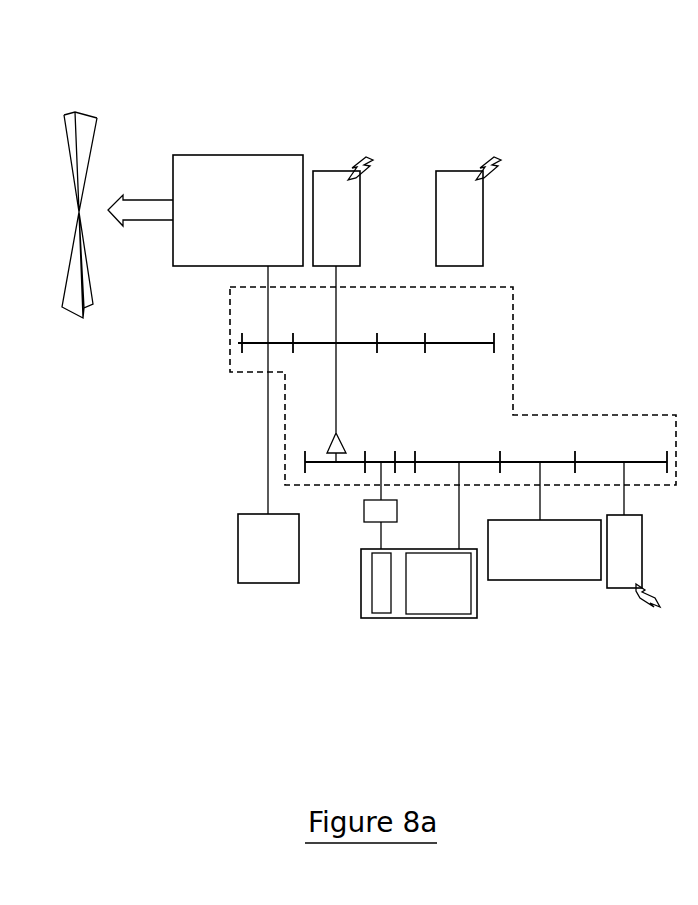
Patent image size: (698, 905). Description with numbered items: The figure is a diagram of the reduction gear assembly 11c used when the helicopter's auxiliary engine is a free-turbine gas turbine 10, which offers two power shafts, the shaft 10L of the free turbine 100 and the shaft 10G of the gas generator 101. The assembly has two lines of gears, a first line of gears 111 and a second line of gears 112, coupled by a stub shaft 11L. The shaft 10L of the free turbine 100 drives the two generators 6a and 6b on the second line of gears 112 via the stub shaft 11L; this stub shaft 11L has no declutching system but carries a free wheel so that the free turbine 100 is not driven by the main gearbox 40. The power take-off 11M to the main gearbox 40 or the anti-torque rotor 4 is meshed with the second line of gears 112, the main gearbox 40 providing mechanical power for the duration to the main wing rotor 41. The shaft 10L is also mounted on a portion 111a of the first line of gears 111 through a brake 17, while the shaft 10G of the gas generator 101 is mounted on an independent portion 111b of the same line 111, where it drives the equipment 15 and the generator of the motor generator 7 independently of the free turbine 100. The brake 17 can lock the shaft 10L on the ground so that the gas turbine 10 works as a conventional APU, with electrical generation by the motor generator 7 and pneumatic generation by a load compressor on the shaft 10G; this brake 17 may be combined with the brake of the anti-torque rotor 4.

The main wing rotor 41 is at (84, 112).
The main gearbox 40 is at (246, 155).
The generator 6a is at (328, 170).
The generator 6b is at (458, 170).
The reduction gear assembly 11c is at (513, 287).
The second line of gears 112 is at (232, 339).
The first line of gears 111 is at (287, 458).
The stub shaft 11L is at (338, 378).
The power take-off 11M is at (267, 397).
The portion of the first line of gears 111a is at (398, 461).
The portion of the first line of gears 111b is at (411, 460).
The brake 17 is at (364, 509).
The shaft of the free turbine 10L is at (383, 545).
The shaft of the gas generator 10G is at (457, 520).
The anti-torque rotor 4 is at (272, 585).
The free-turbine gas turbine 10 is at (415, 617).
The free turbine 100 is at (371, 605).
The gas generator 101 is at (471, 598).
The equipment 15 is at (553, 581).
The motor generator 7 is at (612, 590).